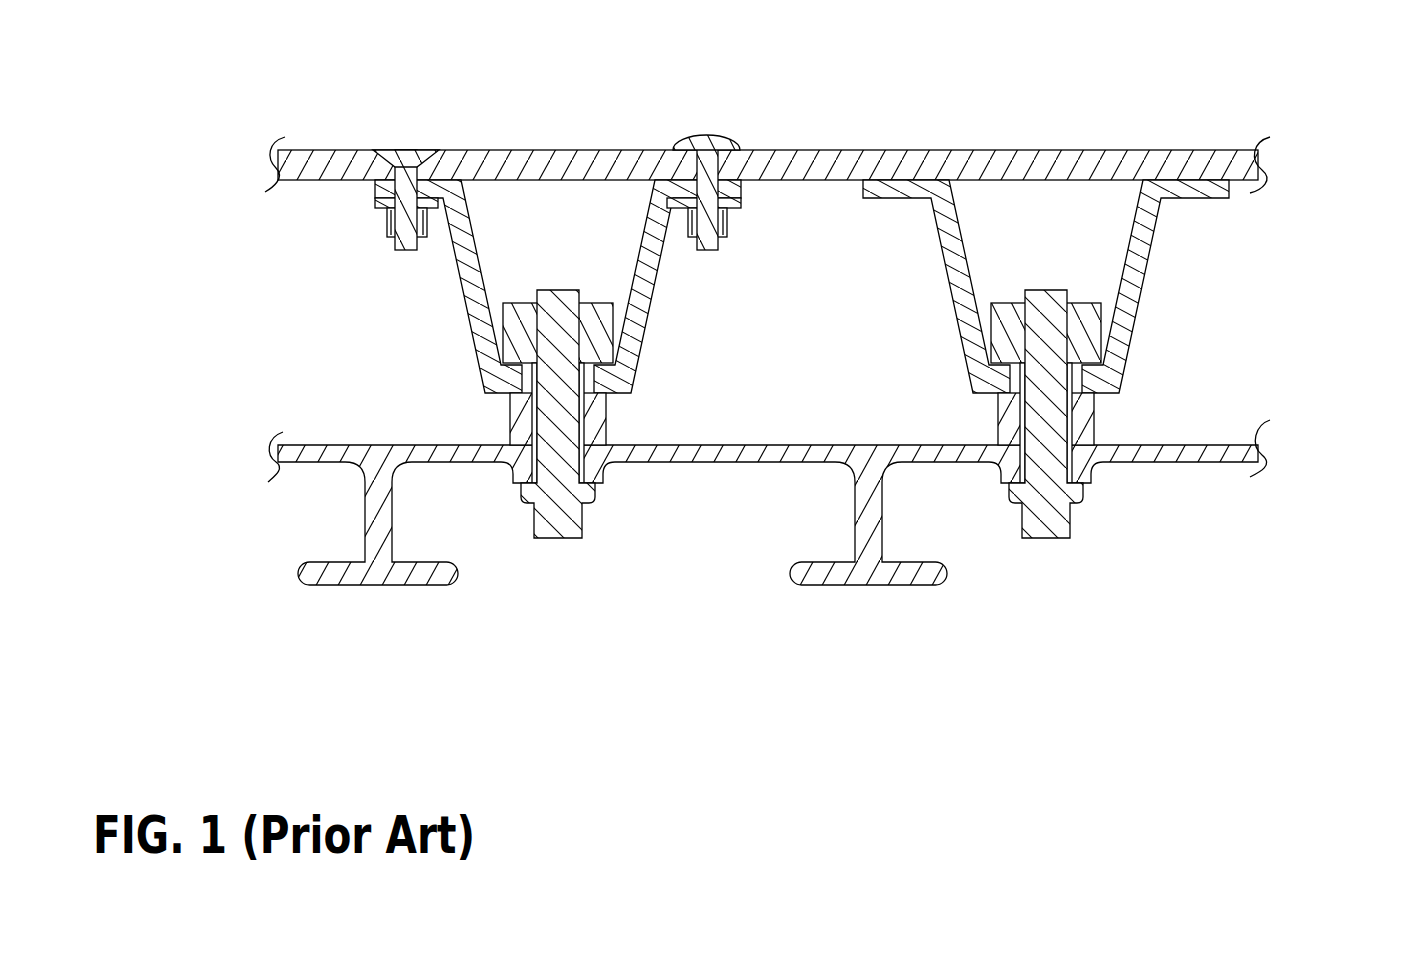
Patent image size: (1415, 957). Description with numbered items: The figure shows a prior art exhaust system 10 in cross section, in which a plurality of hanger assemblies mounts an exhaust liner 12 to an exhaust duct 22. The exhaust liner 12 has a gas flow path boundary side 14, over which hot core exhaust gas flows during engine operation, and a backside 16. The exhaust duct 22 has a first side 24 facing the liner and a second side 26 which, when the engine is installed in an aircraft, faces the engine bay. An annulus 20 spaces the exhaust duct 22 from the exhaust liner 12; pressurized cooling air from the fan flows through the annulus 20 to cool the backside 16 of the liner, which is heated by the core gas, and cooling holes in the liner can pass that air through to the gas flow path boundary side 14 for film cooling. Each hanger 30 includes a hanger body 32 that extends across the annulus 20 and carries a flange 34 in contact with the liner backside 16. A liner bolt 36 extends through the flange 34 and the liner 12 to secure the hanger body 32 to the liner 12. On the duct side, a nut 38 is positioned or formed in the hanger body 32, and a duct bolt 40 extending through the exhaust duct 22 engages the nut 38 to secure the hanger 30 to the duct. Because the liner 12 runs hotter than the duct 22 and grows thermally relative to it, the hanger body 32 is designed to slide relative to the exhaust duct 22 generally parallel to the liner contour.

The exhaust system 10 is at (1313, 112).
The exhaust liner 12 is at (323, 150).
The gas flow path boundary side 14 is at (1003, 150).
The backside 16 is at (313, 180).
The annulus 20 is at (320, 312).
The exhaust duct 22 is at (1187, 445).
The first side 24 is at (787, 445).
The second side 26 is at (710, 462).
The hanger 30 is at (440, 347).
The hanger body 32 is at (647, 317).
The flange 34 is at (740, 192).
The liner bolt 36 is at (602, 199).
The nut 38 is at (1090, 330).
The duct bolt 40 is at (1073, 515).